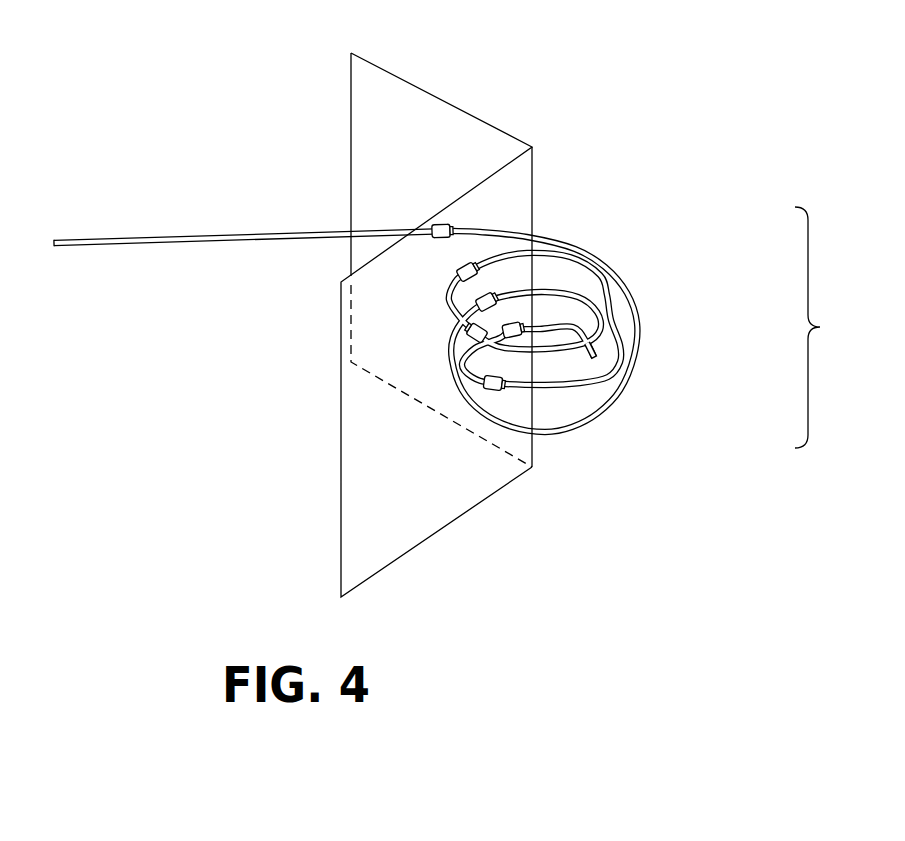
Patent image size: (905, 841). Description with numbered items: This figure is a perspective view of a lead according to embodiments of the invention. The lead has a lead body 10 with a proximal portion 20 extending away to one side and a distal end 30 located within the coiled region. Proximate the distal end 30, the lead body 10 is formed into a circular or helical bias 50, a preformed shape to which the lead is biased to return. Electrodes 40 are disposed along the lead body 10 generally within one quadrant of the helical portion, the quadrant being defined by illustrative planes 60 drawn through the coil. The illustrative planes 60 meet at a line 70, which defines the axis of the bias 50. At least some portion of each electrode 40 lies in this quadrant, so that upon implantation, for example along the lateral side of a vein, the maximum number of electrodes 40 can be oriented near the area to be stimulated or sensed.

The lead body 10 is at (567, 246).
The proximal portion 20 is at (187, 233).
The distal end 30 is at (600, 353).
The electrodes 40 is at (440, 240).
The bias 50 is at (823, 327).
The illustrative planes 60 is at (470, 115).
The line 70 is at (533, 198).